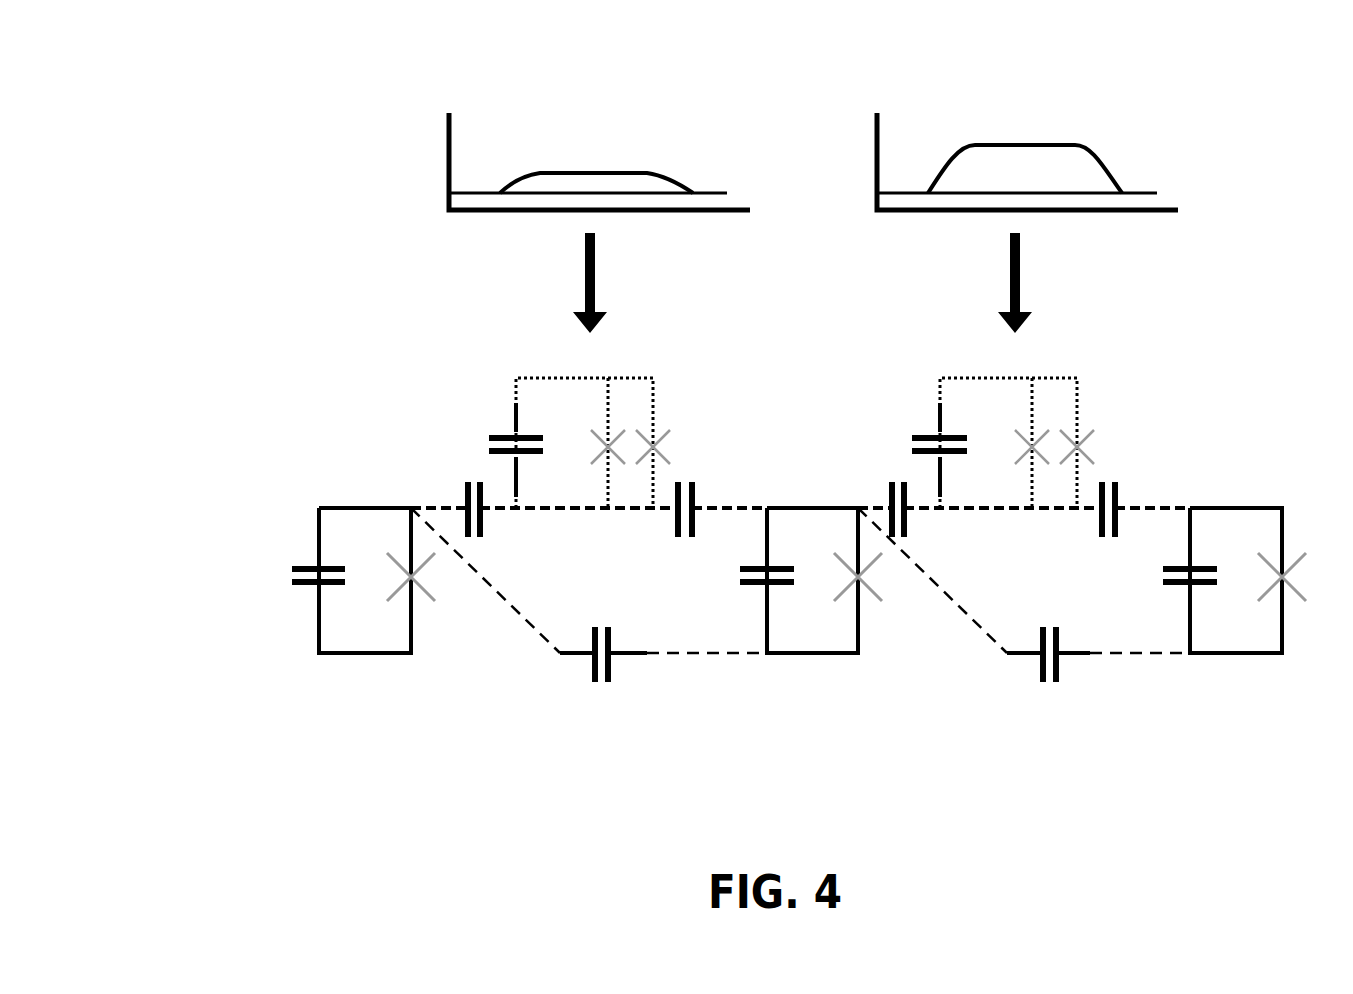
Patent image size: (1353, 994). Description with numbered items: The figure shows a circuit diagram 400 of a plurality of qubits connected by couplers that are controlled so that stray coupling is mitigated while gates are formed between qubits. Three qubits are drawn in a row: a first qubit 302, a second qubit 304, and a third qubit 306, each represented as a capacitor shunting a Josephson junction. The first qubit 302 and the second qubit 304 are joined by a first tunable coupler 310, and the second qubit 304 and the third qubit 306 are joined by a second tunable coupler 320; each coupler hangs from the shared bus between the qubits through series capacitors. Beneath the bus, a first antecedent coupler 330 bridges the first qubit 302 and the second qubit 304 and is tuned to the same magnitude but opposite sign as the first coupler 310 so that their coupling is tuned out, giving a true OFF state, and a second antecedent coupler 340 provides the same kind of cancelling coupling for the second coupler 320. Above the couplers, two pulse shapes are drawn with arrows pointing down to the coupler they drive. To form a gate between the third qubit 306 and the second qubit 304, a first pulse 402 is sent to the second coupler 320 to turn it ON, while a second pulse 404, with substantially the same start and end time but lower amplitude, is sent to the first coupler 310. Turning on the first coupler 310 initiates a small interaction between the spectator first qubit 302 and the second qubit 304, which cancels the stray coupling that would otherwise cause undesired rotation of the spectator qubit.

The circuit diagram 400 is at (196, 65).
The first pulse 402 is at (1135, 162).
The second pulse 404 is at (662, 153).
The coupler C12 310 is at (487, 377).
The coupler C23 320 is at (910, 377).
The antecedent coupler JC12 330 is at (543, 671).
The antecedent coupler JC23 340 is at (991, 671).
The qubit Q1 302 is at (380, 642).
The qubit Q2 304 is at (824, 642).
The qubit Q3 306 is at (1247, 642).